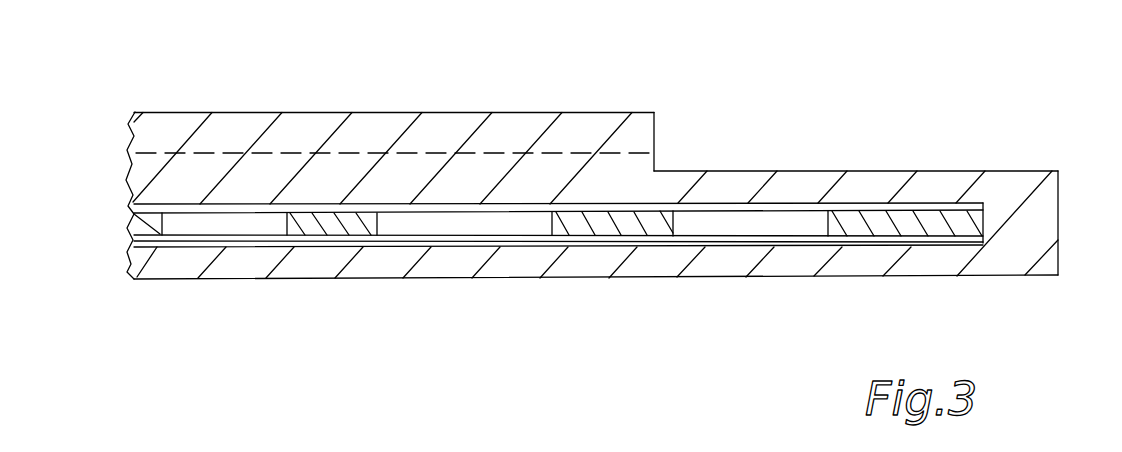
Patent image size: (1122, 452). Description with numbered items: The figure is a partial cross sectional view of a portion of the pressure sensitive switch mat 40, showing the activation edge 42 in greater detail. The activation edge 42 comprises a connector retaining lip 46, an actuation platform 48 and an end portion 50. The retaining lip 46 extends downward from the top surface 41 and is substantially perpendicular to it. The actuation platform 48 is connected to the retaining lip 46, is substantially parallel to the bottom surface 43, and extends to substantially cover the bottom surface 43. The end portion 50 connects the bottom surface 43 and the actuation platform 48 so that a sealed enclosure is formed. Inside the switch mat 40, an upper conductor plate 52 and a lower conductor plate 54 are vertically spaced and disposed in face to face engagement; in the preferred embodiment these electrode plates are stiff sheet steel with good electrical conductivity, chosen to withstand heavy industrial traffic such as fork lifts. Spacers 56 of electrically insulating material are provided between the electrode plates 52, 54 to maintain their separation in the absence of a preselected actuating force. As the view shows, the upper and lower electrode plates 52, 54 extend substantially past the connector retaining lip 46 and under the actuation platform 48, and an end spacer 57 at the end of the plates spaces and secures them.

The pressure sensitive switch mat 40 is at (327, 122).
The top surface 41 is at (405, 112).
The activation edge 42 is at (927, 95).
The bottom surface 43 is at (493, 278).
The connector retaining lip 46 is at (656, 122).
The actuation platform 48 is at (758, 171).
The end portion 50 is at (1058, 201).
The upper conductor plate 52 is at (133, 210).
The lower conductor plate 54 is at (137, 242).
The spacers 56 is at (313, 236).
The end spacer 57 is at (917, 234).